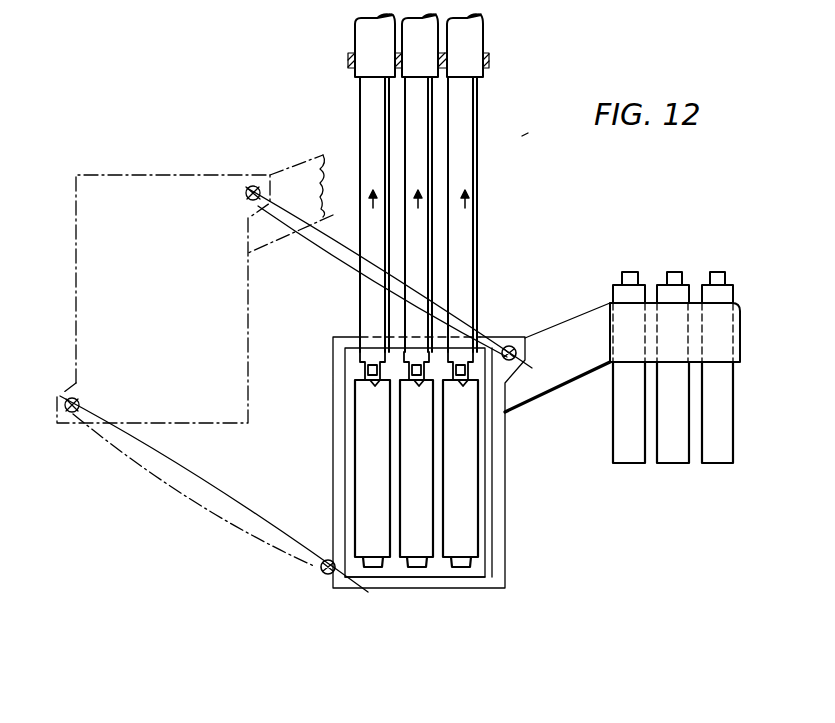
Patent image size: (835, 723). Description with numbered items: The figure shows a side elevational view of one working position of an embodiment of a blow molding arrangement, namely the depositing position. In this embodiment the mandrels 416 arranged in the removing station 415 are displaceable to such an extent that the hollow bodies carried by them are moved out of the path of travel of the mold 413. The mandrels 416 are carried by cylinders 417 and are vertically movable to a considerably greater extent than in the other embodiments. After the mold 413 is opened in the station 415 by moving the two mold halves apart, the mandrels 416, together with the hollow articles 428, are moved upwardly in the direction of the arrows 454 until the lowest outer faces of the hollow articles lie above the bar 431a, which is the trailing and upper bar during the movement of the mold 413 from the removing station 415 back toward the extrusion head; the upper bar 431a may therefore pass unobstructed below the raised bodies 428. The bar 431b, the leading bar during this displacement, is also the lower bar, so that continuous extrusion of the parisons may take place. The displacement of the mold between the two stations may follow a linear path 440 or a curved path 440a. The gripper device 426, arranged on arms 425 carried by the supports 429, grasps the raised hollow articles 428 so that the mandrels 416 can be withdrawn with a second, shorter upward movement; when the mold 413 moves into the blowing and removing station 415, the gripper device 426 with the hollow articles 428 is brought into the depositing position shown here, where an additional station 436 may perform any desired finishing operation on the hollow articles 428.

The mold 413 is at (483, 570).
The removing station 415 is at (528, 133).
The mandrels 416 is at (473, 349).
The cylinders 417 is at (478, 41).
The arms 425 is at (560, 332).
The gripper device 426 is at (653, 338).
The hollow articles 428 is at (618, 427).
The supports 429 is at (500, 471).
The upper bar 431a is at (510, 346).
The lower bar 431b is at (325, 557).
The additional station 436 is at (689, 247).
The linear path 440 is at (228, 505).
The curved path 440a is at (215, 527).
The arrows 454 is at (467, 203).